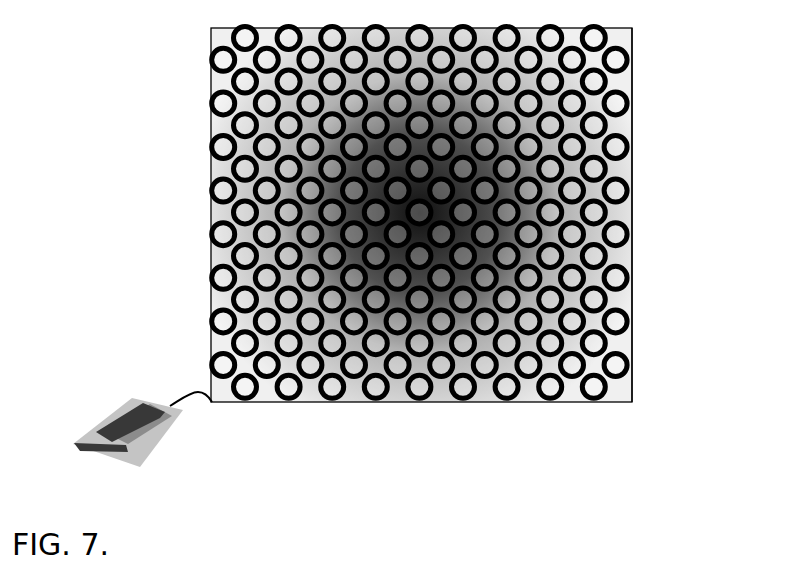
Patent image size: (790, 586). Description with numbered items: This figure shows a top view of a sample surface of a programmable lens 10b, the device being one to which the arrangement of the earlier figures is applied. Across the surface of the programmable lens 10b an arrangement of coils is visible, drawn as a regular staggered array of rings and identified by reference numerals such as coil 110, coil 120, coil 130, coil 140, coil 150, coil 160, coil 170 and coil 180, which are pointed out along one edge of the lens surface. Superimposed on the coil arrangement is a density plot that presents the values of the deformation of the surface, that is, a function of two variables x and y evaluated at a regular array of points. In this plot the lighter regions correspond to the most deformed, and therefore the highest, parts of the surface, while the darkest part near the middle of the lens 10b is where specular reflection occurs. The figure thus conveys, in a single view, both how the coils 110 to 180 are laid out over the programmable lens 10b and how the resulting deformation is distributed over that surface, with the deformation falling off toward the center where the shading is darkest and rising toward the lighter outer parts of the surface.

The programmable lens 10b is at (493, 402).
The coil 110 is at (622, 369).
The coil 120 is at (622, 327).
The coil 130 is at (622, 285).
The coil 140 is at (622, 243).
The coil 150 is at (622, 200).
The coil 160 is at (622, 158).
The coil 170 is at (622, 117).
The coil 180 is at (622, 75).